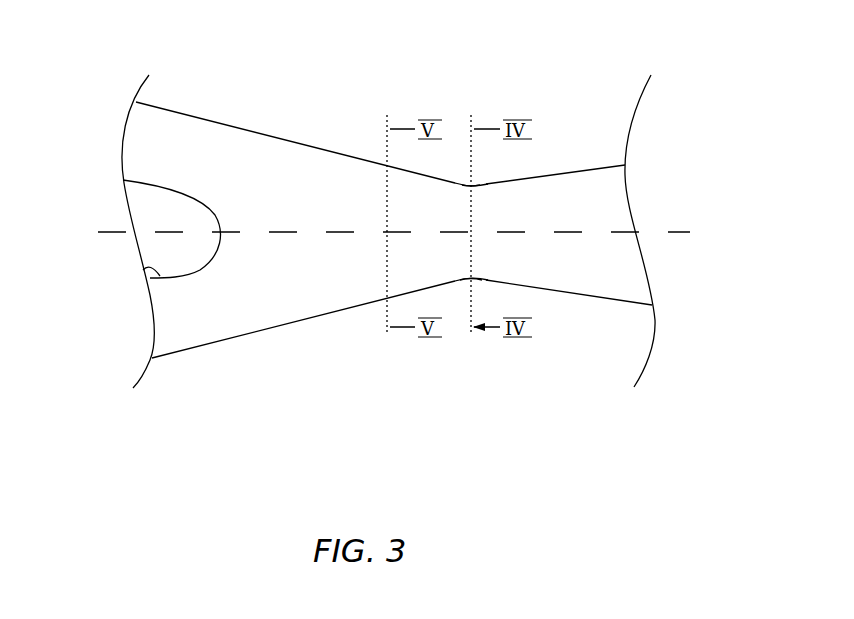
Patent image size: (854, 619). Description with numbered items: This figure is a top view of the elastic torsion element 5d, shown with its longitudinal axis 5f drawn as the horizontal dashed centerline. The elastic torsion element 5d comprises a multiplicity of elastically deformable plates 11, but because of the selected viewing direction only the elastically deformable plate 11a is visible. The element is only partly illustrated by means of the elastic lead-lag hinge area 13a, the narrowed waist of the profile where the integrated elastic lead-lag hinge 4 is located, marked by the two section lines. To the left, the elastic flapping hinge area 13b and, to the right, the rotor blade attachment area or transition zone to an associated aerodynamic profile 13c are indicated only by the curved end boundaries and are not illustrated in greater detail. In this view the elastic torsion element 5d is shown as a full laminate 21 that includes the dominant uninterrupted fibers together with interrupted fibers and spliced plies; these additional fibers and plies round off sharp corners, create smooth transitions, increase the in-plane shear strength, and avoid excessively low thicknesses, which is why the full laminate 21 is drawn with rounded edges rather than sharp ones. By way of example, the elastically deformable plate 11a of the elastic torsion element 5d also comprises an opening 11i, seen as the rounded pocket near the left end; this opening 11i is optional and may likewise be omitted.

The integrated elastic lead-lag hinge 4 is at (476, 181).
The elastic torsion element 5d is at (183, 70).
The longitudinal axis 5f is at (112, 226).
The multiplicity of elastically deformable plates 11 is at (630, 339).
The elastically deformable plate 11a is at (192, 333).
The opening 11i is at (145, 272).
The elastic lead-lag hinge area 13a is at (459, 325).
The elastic flapping hinge area 13b is at (81, 114).
The rotor blade attachment area or transition zone to an associated aerodynamic prof 13c is at (683, 120).
The full laminate 21 is at (583, 83).